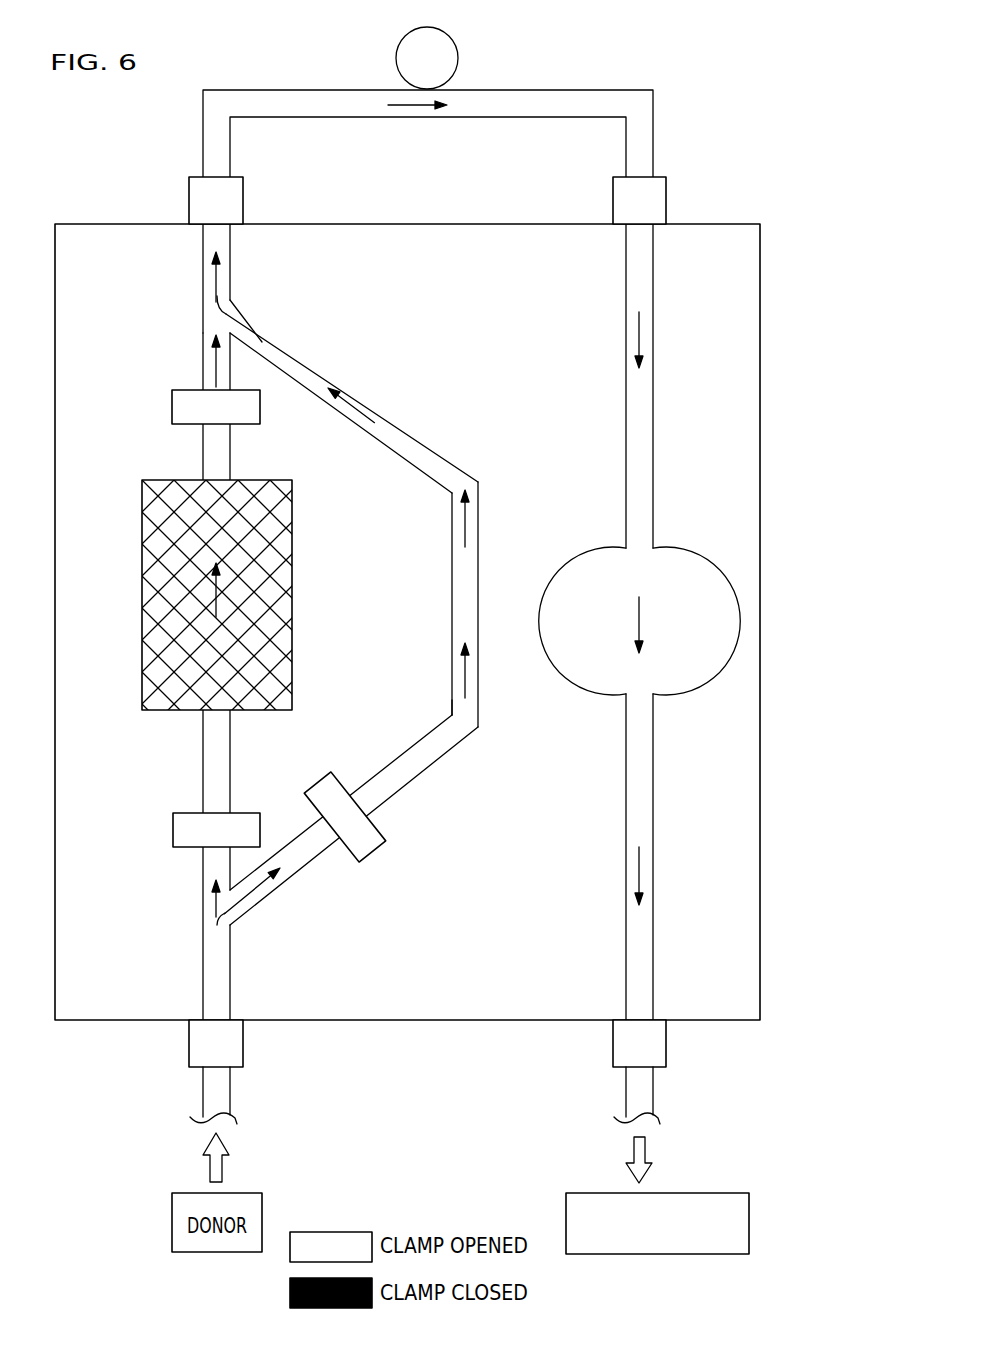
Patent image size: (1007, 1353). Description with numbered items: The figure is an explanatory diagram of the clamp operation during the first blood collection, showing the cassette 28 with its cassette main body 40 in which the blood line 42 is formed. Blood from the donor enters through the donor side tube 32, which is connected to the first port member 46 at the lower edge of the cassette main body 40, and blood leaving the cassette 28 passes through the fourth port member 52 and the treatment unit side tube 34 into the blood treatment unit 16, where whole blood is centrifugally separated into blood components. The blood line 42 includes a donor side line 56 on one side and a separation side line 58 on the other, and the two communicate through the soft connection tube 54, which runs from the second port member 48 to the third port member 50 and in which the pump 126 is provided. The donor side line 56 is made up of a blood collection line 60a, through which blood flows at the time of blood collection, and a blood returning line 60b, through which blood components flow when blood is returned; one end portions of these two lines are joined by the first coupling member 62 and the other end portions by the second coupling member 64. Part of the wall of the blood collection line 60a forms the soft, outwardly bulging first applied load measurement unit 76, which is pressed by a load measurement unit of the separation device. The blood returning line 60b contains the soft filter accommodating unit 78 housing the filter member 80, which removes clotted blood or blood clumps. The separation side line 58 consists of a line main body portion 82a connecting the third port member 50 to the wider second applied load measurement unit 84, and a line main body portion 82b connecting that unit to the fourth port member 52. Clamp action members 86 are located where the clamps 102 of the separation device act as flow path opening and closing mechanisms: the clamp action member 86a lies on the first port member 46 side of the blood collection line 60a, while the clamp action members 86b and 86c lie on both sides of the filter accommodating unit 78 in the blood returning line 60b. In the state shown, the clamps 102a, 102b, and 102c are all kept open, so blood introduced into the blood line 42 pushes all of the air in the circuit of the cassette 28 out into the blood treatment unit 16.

The blood treatment unit 16 is at (750, 1226).
The cassette 28 is at (80, 220).
The donor side tube 32 is at (218, 1096).
The treatment unit side tube 34 is at (642, 1096).
The cassette main body 40 is at (112, 222).
The blood line 42 is at (483, 622).
The first port member 46 is at (228, 1047).
The second port member 48 is at (243, 204).
The third port member 50 is at (666, 204).
The fourth port member 52 is at (652, 1047).
The connection tube 54 is at (540, 105).
The donor side line 56 is at (450, 442).
The separation side line 58 is at (612, 312).
The blood collection line 60a is at (438, 742).
The blood returning line 60b is at (213, 453).
The first coupling member 62 is at (213, 906).
The second coupling member 64 is at (218, 318).
The first applied load measurement unit 76 is at (465, 597).
The filter accommodating unit 78 is at (293, 636).
The filter member 80 is at (260, 553).
The line main body portion 82a is at (645, 457).
The line main body portion 82b is at (645, 830).
The second applied load measurement unit 84 is at (588, 655).
The clamp action members 86 is at (296, 676).
The clamp action member 86a is at (370, 797).
The clamp action member 86b is at (218, 868).
The clamp action member 86c is at (218, 430).
The clamps 102 is at (270, 638).
The clamp 102a is at (373, 860).
The clamp 102b is at (190, 812).
The clamp 102c is at (172, 410).
The pump 126 is at (397, 60).